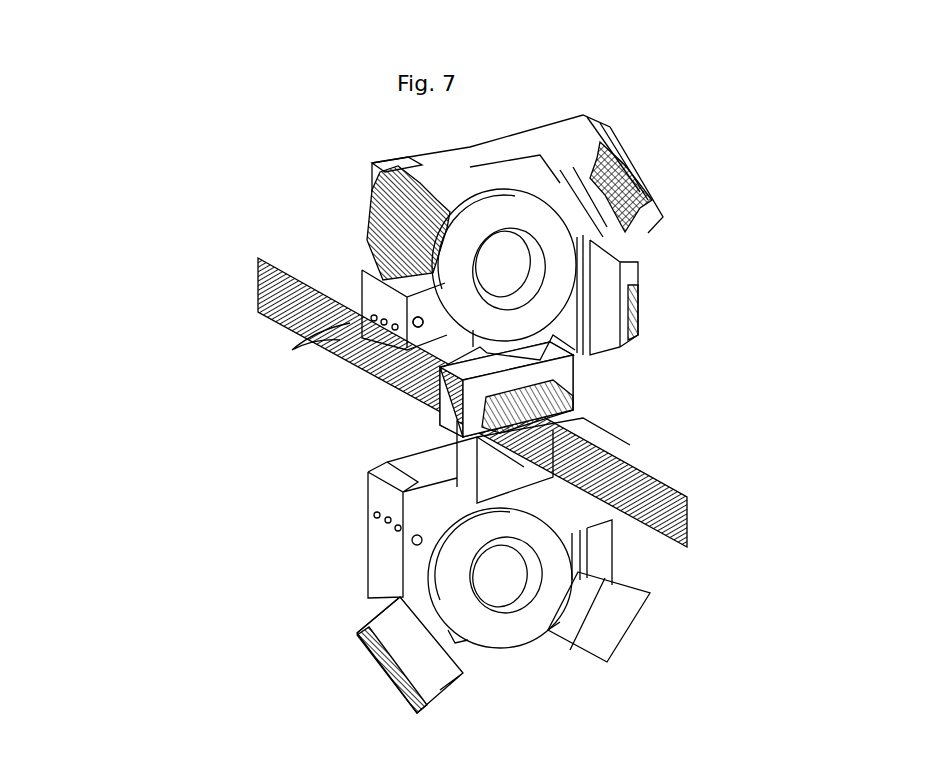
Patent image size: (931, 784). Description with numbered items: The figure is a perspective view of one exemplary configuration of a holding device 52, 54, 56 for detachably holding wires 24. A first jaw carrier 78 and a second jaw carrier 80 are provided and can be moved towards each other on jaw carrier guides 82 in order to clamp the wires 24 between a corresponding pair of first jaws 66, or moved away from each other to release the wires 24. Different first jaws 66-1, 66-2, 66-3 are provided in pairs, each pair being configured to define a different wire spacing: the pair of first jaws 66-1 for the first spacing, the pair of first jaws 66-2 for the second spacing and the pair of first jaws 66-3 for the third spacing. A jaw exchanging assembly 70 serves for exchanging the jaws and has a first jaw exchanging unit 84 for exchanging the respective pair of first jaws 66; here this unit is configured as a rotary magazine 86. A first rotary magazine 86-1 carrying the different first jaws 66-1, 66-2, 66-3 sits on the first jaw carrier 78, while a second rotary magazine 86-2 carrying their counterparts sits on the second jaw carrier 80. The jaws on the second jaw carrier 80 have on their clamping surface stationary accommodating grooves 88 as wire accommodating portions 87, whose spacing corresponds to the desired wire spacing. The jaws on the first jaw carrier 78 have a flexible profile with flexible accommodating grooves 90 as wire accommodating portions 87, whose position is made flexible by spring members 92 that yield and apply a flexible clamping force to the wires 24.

The wires 24 is at (472, 402).
The holding device 52 is at (308, 578).
The holding device 54 is at (308, 578).
The holding device 56 is at (200, 517).
The first jaw 66 is at (440, 177).
The first jaws for the first wire spacing 66-1 is at (570, 380).
The first jaws for the second wire spacing 66-2 is at (650, 227).
The first jaws for the third wire spacing 66-3 is at (427, 187).
The jaw exchanging assembly 70 is at (672, 187).
The first jaw carrier 78 is at (532, 137).
The second jaw carrier 80 is at (377, 553).
The jaw carrier guides 82 is at (608, 312).
The first jaw exchanging unit 84 is at (347, 223).
The rotary magazine 86 is at (655, 167).
The first rotary magazine 86-1 is at (357, 268).
The second rotary magazine 86-2 is at (610, 647).
The wire accommodating portions 87 is at (368, 233).
The stationary accommodating grooves 88 is at (380, 672).
The flexible accommodating grooves 90 is at (373, 233).
The spring members 92 is at (420, 187).